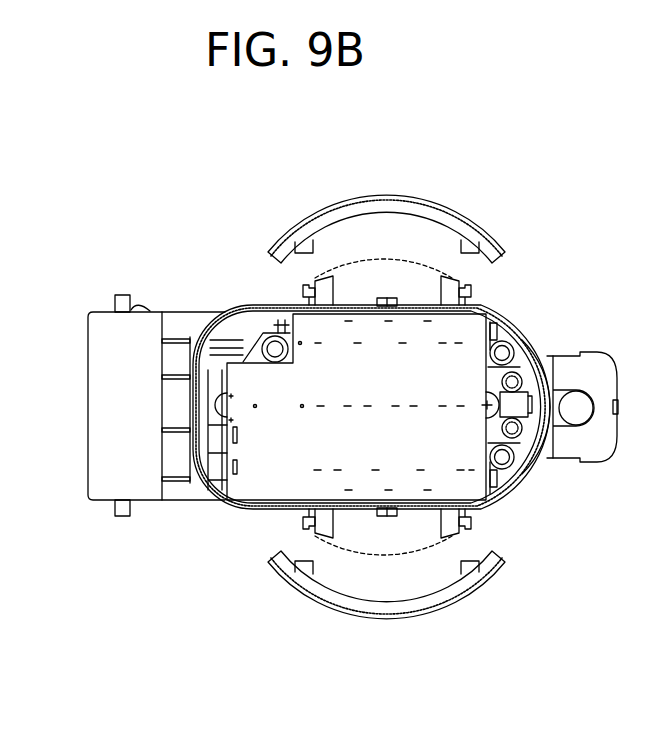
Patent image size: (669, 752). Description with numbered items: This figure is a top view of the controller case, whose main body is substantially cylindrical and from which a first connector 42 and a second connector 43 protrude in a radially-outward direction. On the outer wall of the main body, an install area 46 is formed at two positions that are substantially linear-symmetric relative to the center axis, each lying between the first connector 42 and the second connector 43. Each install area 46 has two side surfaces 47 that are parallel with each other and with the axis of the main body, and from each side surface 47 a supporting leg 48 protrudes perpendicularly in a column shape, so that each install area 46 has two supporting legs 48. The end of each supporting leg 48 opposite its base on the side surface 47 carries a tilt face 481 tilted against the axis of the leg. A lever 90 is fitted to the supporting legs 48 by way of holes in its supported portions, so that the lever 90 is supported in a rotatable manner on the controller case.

The first connector 42 is at (105, 308).
The second connector 43 is at (618, 368).
The install area 46 is at (390, 273).
The side surface 47 is at (292, 518).
The supporting leg 48 is at (305, 292).
The tilt face 481 is at (307, 287).
The lever 90 is at (417, 196).